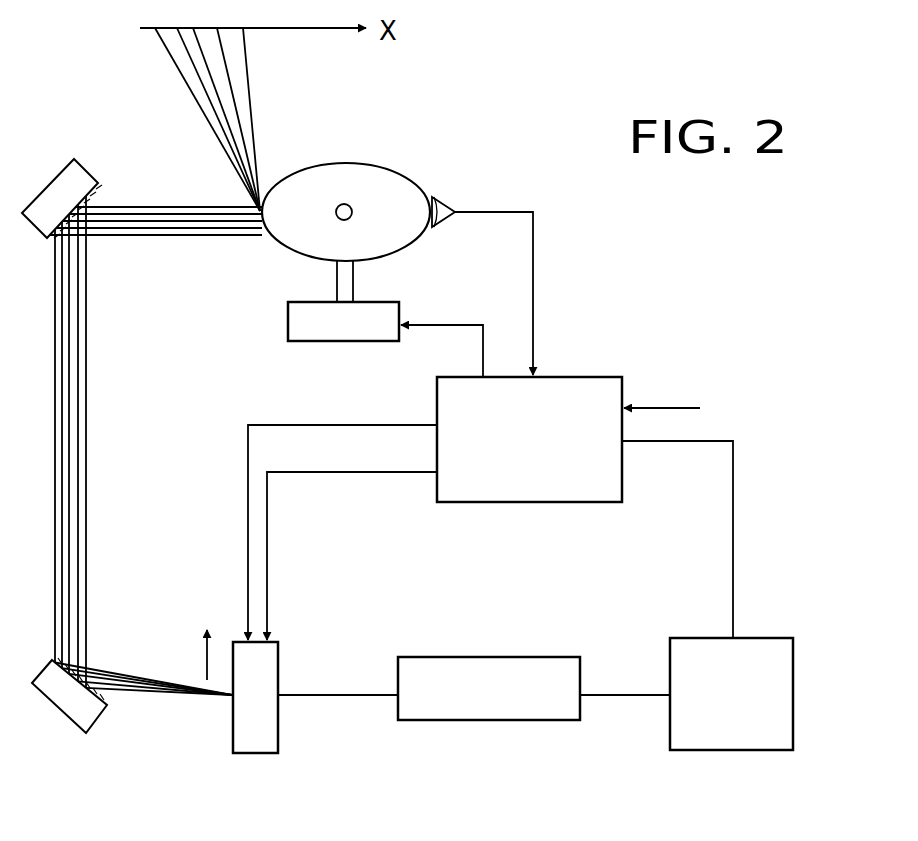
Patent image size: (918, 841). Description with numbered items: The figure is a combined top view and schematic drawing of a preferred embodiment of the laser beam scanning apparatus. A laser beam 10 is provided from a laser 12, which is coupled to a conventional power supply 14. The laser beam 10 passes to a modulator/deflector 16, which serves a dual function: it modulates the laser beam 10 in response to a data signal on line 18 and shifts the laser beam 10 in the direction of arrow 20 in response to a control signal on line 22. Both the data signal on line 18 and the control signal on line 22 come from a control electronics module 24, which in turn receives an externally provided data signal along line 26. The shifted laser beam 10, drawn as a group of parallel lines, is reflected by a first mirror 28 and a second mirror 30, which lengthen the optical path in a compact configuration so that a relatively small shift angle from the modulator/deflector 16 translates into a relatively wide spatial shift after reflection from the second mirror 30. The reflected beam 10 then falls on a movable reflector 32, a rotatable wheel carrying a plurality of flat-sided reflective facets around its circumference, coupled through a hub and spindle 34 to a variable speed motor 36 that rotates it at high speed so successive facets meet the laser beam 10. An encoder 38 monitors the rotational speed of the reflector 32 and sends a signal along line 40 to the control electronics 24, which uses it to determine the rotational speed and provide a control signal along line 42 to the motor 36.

The laser beam 10 is at (143, 243).
The laser 12 is at (502, 720).
The power supply 14 is at (740, 750).
The modulator/deflector 16 is at (260, 745).
The line 18 is at (339, 474).
The arrow 20 is at (205, 658).
The line 22 is at (305, 423).
The control electronics module 24 is at (555, 502).
The line 26 is at (660, 408).
The first mirror 28 is at (72, 720).
The second mirror 30 is at (42, 198).
The movable reflector 32 is at (383, 176).
The hub and spindle 34 is at (355, 283).
The variable speed motor 36 is at (320, 343).
The encoder 38 is at (442, 220).
The line 40 is at (535, 300).
The line 42 is at (440, 325).